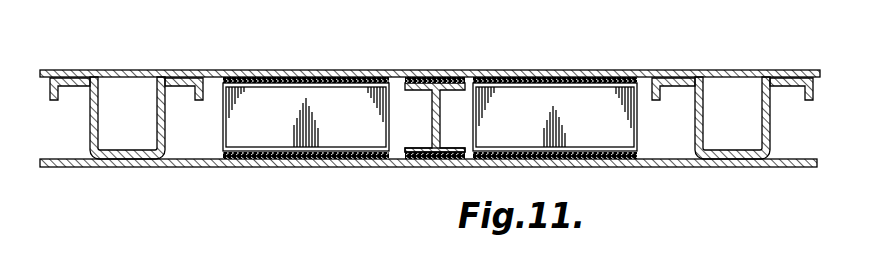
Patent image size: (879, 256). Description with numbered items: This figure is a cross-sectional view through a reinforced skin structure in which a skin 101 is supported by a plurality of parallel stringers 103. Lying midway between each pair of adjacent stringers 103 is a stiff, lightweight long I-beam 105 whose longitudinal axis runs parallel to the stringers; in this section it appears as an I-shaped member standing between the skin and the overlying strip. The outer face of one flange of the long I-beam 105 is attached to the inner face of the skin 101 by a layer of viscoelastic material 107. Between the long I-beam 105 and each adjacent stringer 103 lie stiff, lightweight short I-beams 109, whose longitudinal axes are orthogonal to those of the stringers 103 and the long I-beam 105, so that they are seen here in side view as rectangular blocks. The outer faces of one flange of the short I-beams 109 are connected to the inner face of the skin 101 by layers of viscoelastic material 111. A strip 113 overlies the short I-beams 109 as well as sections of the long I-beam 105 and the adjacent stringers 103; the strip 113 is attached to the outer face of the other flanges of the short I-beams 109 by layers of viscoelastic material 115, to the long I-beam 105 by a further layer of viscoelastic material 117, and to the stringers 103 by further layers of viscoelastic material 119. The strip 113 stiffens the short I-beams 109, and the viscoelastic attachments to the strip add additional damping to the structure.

The skin 101 is at (183, 161).
The stringers 103 is at (90, 125).
The long I-beam 105 is at (432, 117).
The layer of viscoelastic material 107 is at (432, 160).
The short I-beams 109 is at (270, 123).
The layers of viscoelastic material 111 is at (300, 160).
The strip 113 is at (275, 70).
The layers of viscoelastic material 115 is at (347, 77).
The layer of viscoelastic material 117 is at (450, 77).
The layers of viscoelastic material 119 is at (84, 79).